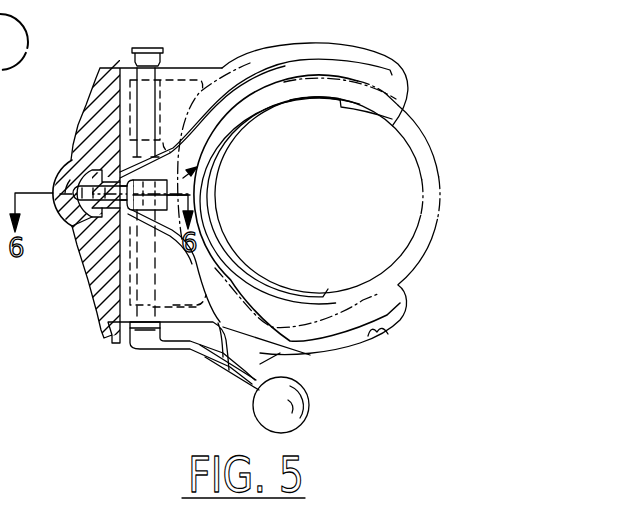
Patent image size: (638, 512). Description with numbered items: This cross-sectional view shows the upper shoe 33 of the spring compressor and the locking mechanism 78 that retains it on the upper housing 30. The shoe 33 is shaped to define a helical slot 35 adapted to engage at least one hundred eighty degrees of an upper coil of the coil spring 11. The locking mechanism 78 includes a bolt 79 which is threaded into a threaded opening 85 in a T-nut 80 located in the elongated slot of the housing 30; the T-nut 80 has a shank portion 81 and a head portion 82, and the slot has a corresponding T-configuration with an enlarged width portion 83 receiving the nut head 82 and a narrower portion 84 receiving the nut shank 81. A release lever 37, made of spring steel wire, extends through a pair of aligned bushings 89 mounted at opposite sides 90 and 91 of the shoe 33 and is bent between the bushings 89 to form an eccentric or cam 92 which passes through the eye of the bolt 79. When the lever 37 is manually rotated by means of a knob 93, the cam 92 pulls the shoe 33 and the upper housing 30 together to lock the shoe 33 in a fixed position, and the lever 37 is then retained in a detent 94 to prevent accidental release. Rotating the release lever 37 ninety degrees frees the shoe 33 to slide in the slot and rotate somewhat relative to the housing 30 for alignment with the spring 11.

The coil spring 11 is at (415, 117).
The upper housing 30 is at (110, 318).
The upper shoe 33 is at (337, 43).
The helical slot 35 is at (377, 332).
The release lever 37 is at (158, 352).
The locking mechanism 78 is at (185, 172).
The bolt 79 is at (207, 190).
The T-nut 80 is at (83, 214).
The shank portion 81 is at (84, 150).
The head portion 82 is at (63, 168).
The enlarged width portion 83 is at (88, 223).
The narrower portion 84 is at (101, 168).
The threaded opening 85 is at (62, 180).
The bushings 89 is at (160, 60).
The side of shoe 90 is at (182, 322).
The side of shoe 91 is at (198, 70).
The eccentric or cam 92 is at (163, 170).
The knob 93 is at (310, 413).
The detent 94 is at (227, 367).